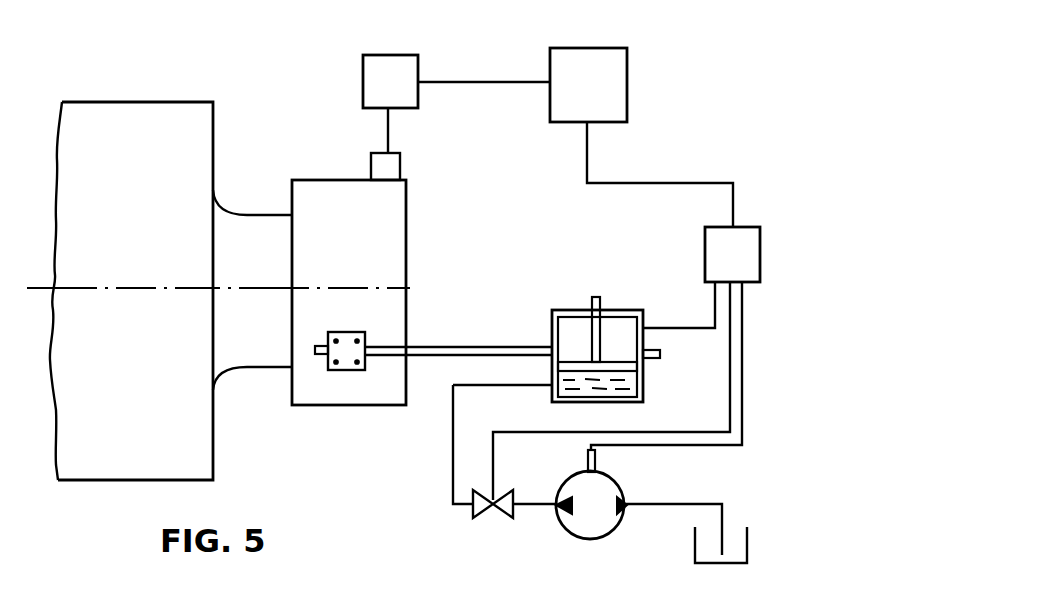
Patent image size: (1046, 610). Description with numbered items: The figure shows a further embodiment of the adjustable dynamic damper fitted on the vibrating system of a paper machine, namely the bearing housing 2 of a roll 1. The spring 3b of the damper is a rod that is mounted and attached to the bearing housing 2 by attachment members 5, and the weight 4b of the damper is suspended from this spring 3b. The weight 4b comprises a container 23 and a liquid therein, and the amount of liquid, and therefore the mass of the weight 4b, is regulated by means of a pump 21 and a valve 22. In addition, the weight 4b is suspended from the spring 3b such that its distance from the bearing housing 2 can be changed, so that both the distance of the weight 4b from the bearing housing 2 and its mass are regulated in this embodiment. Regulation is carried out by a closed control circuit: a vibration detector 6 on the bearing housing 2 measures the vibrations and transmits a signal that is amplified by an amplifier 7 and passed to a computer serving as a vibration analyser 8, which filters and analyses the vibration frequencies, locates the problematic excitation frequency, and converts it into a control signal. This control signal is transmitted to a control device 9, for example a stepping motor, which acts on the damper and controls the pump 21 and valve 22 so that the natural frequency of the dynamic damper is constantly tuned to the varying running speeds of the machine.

The roll 1 is at (120, 118).
The bearing housing 2 is at (347, 197).
The spring 3b is at (450, 348).
The weight 4b is at (552, 340).
The attachment members 5 is at (338, 370).
The vibration detector 6 is at (417, 172).
The amplifier 7 is at (394, 65).
The vibration analyser 8 is at (598, 80).
The control device 9 is at (752, 265).
The pump 21 is at (586, 522).
The valve 22 is at (480, 513).
The container 23 is at (700, 554).